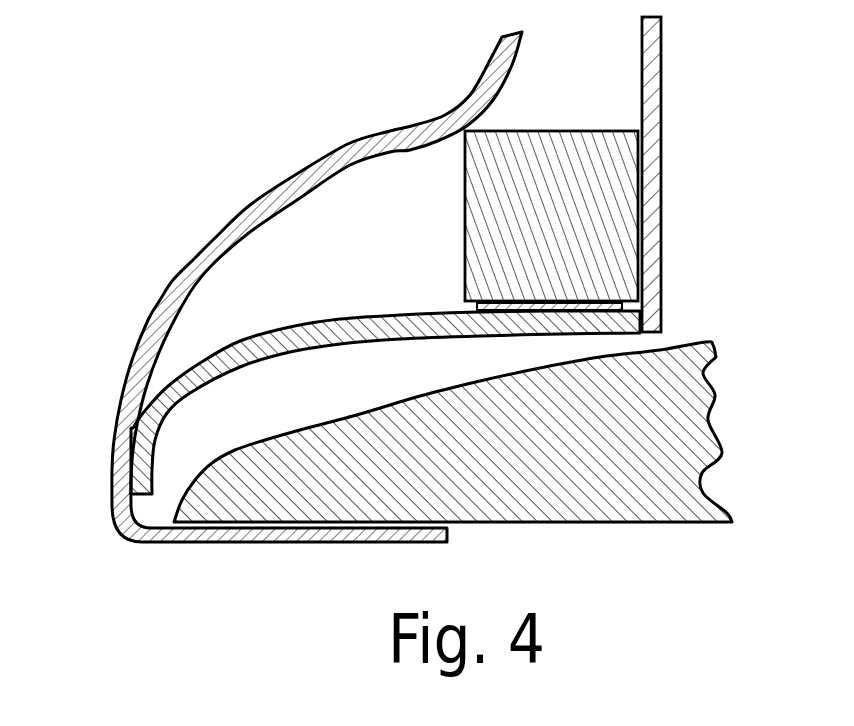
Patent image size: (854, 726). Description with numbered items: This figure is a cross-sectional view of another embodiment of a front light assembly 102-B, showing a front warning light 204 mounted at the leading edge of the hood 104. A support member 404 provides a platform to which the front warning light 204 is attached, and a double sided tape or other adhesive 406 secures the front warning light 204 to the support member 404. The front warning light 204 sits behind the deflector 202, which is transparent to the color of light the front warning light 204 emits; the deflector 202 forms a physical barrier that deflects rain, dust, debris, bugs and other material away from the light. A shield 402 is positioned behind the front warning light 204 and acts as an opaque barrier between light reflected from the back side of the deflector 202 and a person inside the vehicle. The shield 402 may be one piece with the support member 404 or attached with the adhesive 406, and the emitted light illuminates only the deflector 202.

The front light assembly 102-B is at (133, 107).
The deflector 202 is at (370, 131).
The front warning light 204 is at (512, 131).
The shield 402 is at (661, 133).
The support member 404 is at (251, 338).
The double sided tape or adhesive 406 is at (477, 306).
The hood 104 is at (683, 343).